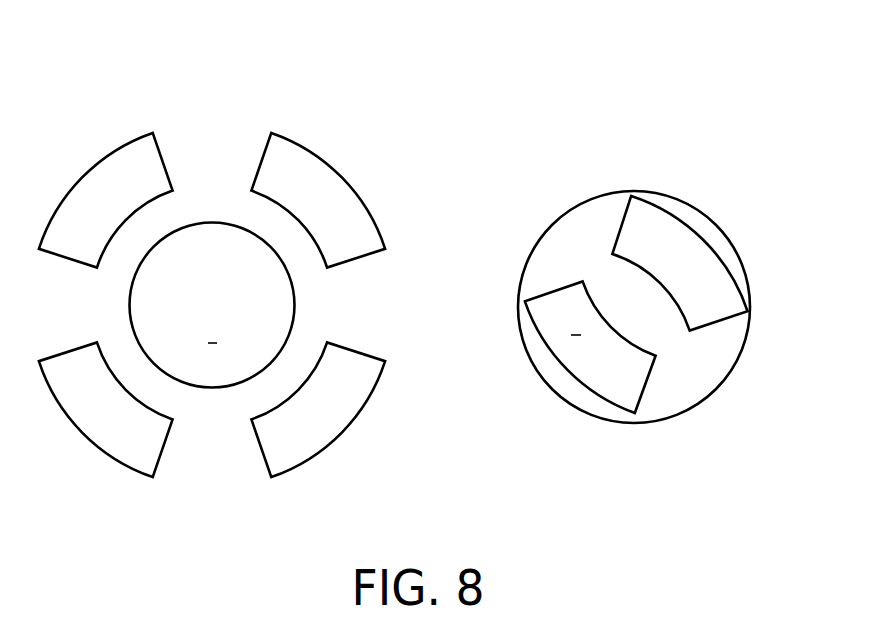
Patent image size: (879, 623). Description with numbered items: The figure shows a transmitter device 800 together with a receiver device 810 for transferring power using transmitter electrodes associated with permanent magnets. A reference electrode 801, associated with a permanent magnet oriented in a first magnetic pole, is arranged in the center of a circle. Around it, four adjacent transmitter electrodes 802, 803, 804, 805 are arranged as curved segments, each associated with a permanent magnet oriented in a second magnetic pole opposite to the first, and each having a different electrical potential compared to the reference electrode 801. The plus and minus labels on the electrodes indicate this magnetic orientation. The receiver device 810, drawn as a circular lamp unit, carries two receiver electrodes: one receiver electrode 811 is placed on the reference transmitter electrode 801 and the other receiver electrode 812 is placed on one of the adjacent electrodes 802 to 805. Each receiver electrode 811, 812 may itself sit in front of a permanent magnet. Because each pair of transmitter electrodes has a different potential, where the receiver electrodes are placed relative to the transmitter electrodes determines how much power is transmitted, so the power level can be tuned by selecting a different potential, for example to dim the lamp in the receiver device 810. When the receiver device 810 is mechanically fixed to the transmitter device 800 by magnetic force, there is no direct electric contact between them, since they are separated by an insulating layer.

The transmitter device 800 is at (190, 92).
The reference electrode 801 is at (295, 305).
The adjacent transmitter electrode 802 is at (345, 177).
The adjacent transmitter electrode 803 is at (345, 436).
The adjacent transmitter electrode 804 is at (79, 436).
The adjacent transmitter electrode 805 is at (79, 177).
The receiver device 810 is at (560, 218).
The receiver electrode 811 is at (565, 375).
The receiver electrode 812 is at (703, 239).